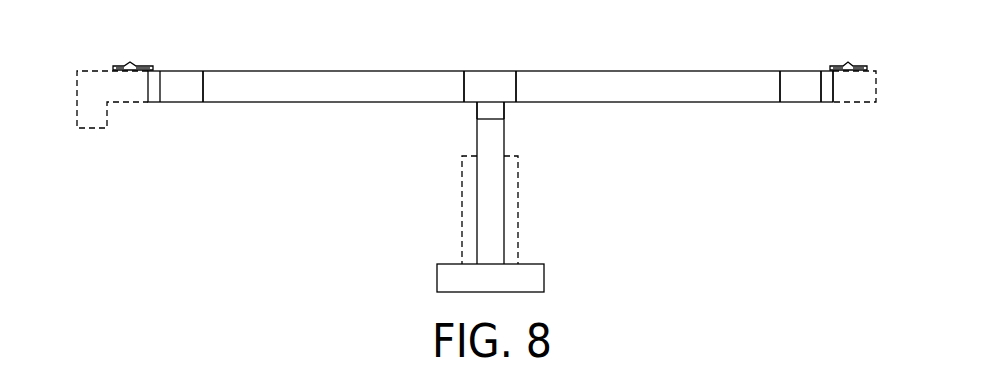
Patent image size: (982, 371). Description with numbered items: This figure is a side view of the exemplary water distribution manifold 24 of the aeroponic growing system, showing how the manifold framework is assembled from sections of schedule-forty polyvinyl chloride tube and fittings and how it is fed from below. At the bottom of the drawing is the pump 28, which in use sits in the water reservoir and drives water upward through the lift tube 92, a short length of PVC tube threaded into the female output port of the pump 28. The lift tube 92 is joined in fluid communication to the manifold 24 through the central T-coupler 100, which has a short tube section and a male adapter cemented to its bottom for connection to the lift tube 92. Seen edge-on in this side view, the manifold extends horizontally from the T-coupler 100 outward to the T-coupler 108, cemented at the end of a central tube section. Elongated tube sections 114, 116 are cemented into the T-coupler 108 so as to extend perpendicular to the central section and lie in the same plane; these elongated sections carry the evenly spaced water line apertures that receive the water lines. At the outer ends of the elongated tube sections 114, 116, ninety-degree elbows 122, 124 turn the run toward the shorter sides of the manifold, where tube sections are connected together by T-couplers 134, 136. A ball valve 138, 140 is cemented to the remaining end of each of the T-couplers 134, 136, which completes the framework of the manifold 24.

The water distribution manifold 24 is at (537, 66).
The pump 28 is at (533, 263).
The lift tube 92 is at (505, 138).
The T-coupler 100 is at (505, 112).
The T-coupler 108 is at (480, 70).
The elongated tube section 114 is at (347, 103).
The elongated tube section 116 is at (717, 103).
The 90 degree elbow 122 is at (187, 103).
The 90 degree elbow 124 is at (800, 103).
The T-coupler 134 is at (155, 103).
The T-coupler 136 is at (827, 103).
The valve 138 is at (142, 66).
The valve 140 is at (846, 64).